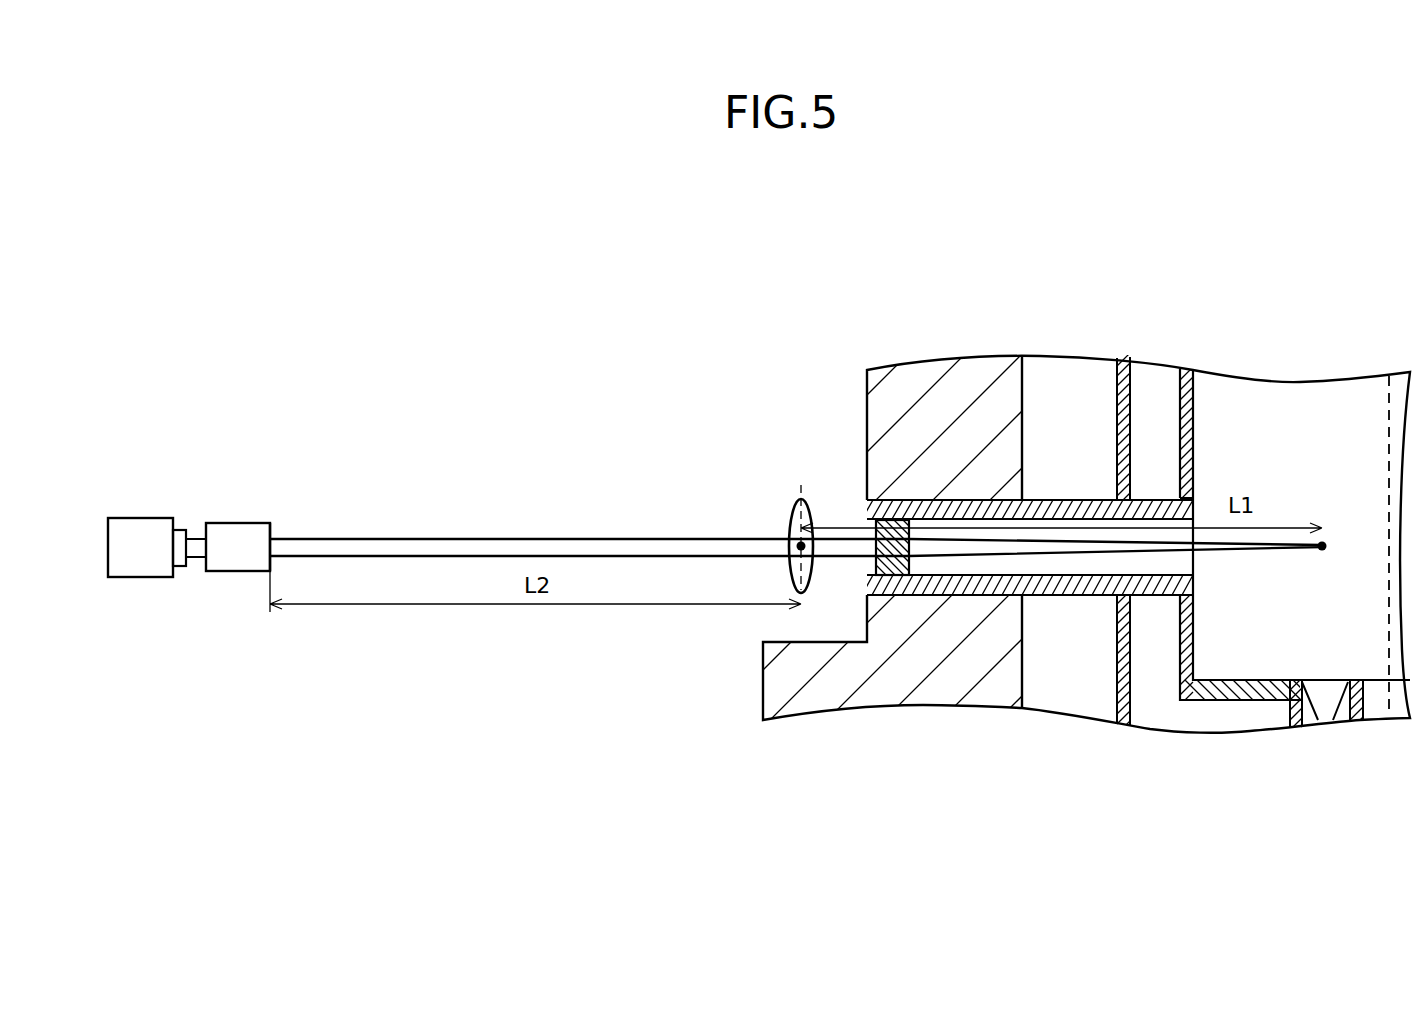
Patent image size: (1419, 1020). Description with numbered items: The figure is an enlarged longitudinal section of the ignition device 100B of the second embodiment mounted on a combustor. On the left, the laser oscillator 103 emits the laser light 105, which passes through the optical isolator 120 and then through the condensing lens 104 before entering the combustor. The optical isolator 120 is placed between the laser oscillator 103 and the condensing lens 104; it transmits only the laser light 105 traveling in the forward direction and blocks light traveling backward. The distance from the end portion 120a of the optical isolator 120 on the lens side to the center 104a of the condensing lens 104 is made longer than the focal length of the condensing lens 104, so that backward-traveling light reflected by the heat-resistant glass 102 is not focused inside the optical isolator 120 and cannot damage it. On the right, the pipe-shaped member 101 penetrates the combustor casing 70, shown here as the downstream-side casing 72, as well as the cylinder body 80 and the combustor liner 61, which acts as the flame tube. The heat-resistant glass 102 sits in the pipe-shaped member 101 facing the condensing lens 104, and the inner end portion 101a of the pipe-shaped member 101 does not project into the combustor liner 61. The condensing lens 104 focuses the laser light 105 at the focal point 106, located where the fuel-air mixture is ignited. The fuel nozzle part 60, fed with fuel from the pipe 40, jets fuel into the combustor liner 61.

The ignition device 100B is at (702, 601).
The laser oscillator 103 is at (125, 568).
The optical isolator 120 is at (217, 528).
The end portion 120a is at (272, 525).
The laser light 105 is at (561, 545).
The condensing lens 104 is at (796, 530).
The center 104a is at (796, 553).
The focal point 106 is at (1325, 543).
The combustor casing 70 is at (961, 511).
The downstream-side casing 72 is at (873, 419).
The cylinder body 80 is at (1120, 425).
The combustor liner 61 is at (1187, 430).
The pipe-shaped member 101 is at (873, 510).
The inner end portion 101a is at (1196, 591).
The heat-resistant glass 102 is at (877, 562).
The fuel nozzle part 60 is at (1282, 724).
The pipe 40 is at (1357, 718).